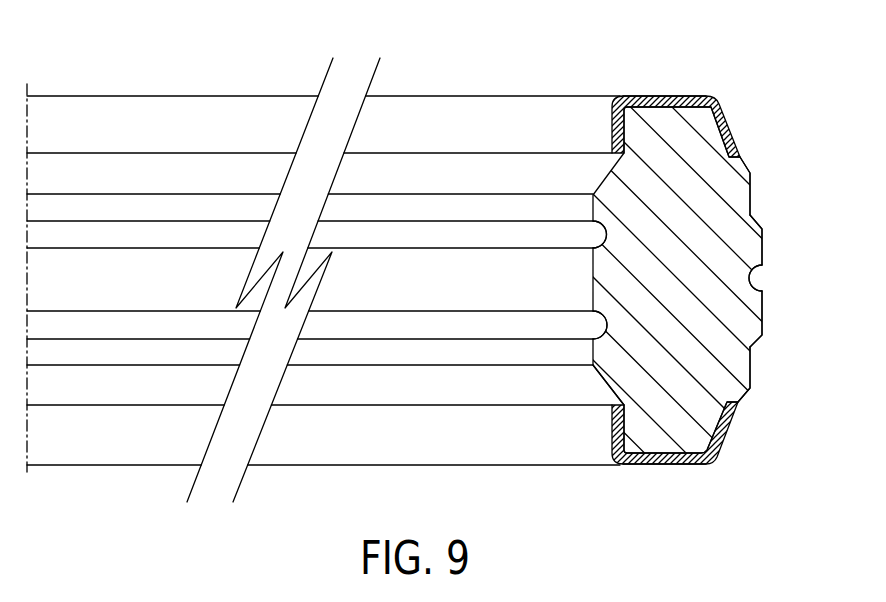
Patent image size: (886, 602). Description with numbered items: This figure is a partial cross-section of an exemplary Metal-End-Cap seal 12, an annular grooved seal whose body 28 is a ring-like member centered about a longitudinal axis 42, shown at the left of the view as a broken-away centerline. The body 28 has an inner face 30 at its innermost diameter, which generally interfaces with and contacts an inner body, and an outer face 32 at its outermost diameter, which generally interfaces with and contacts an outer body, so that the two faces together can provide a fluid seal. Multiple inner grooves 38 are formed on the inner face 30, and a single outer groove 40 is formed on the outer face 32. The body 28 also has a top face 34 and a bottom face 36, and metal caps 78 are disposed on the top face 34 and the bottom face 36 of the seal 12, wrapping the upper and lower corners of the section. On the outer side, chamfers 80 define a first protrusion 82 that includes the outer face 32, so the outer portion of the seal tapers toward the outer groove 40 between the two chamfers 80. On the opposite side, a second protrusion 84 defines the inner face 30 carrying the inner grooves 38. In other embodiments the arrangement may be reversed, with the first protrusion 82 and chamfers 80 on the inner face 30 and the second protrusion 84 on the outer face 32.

The Metal-End-Cap seal 12 is at (456, 270).
The body 28 is at (568, 270).
The inner face 30 is at (568, 301).
The outer face 32 is at (762, 250).
The top face 34 is at (672, 96).
The bottom face 36 is at (668, 465).
The inner grooves 38 is at (594, 236).
The outer groove 40 is at (759, 277).
The longitudinal axis 42 is at (28, 76).
The metal caps 78 is at (700, 279).
The chamfers 80 is at (747, 165).
The first protrusion 82 is at (732, 207).
The second protrusion 84 is at (612, 376).